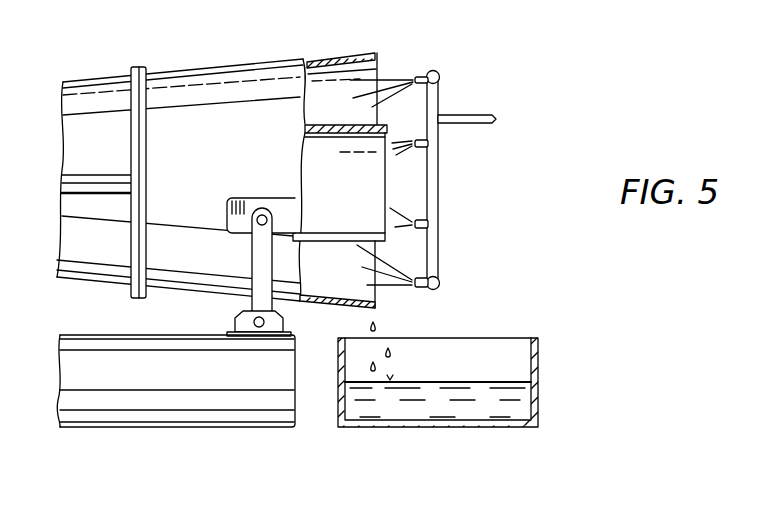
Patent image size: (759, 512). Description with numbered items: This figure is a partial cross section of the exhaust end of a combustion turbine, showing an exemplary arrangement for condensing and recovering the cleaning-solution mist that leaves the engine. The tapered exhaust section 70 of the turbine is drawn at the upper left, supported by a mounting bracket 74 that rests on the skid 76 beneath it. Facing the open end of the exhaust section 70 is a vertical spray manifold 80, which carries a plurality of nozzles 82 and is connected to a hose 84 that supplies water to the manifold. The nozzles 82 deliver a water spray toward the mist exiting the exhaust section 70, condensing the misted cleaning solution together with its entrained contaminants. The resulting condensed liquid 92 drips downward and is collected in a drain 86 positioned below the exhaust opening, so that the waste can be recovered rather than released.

The exhaust section 70 is at (235, 66).
The mounting bracket 74 is at (252, 277).
The skid 76 is at (83, 335).
The spray manifold 80 is at (440, 237).
The nozzle 82 is at (423, 74).
The hose 84 is at (481, 113).
The drain 86 is at (538, 366).
The liquid 92 is at (467, 381).